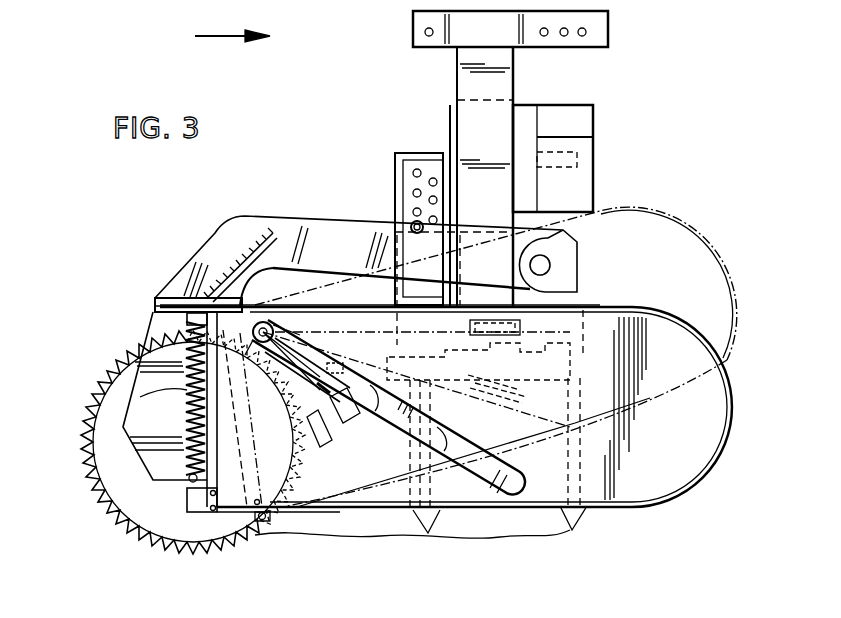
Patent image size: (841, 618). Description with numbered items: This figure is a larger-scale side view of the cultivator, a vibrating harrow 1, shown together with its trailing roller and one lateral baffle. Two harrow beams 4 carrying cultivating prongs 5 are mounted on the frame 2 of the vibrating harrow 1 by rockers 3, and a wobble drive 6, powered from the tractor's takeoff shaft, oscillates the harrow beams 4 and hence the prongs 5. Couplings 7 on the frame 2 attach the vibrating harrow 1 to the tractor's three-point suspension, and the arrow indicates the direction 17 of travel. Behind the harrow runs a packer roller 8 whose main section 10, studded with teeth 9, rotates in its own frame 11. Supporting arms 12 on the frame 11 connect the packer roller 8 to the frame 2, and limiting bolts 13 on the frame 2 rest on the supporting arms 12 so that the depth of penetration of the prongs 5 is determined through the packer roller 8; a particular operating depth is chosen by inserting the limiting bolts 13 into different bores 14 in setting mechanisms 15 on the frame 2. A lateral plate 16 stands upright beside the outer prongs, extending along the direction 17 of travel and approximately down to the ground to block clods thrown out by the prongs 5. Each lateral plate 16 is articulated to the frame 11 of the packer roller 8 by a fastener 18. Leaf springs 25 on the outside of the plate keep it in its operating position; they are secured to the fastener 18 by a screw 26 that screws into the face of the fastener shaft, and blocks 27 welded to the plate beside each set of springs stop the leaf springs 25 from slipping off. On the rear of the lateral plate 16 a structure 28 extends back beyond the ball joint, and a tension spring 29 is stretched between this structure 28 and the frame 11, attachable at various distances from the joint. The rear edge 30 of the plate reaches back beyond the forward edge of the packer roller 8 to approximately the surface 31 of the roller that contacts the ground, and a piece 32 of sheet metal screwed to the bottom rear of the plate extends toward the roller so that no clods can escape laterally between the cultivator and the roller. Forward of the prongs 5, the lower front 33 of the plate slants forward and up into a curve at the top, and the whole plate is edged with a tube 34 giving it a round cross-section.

The vibrating harrow 1 is at (466, 140).
The frame 2 is at (493, 232).
The rockers 3 is at (572, 332).
The harrow beams 4 is at (537, 362).
The prongs 5 is at (570, 530).
The wobble drive 6 is at (527, 143).
The couplings 7 is at (586, 32).
The packer roller 8 is at (162, 520).
The teeth 9 is at (93, 423).
The main section 10 is at (215, 528).
The frame 11 is at (160, 318).
The supporting arms 12 is at (288, 234).
The limiting bolts 13 is at (411, 227).
The bores 14 is at (413, 193).
The setting mechanisms 15 is at (420, 168).
The lateral plates 16 is at (690, 490).
The direction of travel 17 is at (208, 35).
The fastener 18 is at (232, 270).
The leaf springs 25 is at (388, 407).
The screw 26 is at (262, 345).
The blocks 27 is at (315, 400).
The structure 28 is at (174, 298).
The tension spring 29 is at (142, 396).
The rear edge 30 is at (240, 465).
The surface 31 is at (268, 521).
The piece of sheet metal 32 is at (197, 500).
The lower front 33 is at (675, 495).
The tube 34 is at (705, 463).